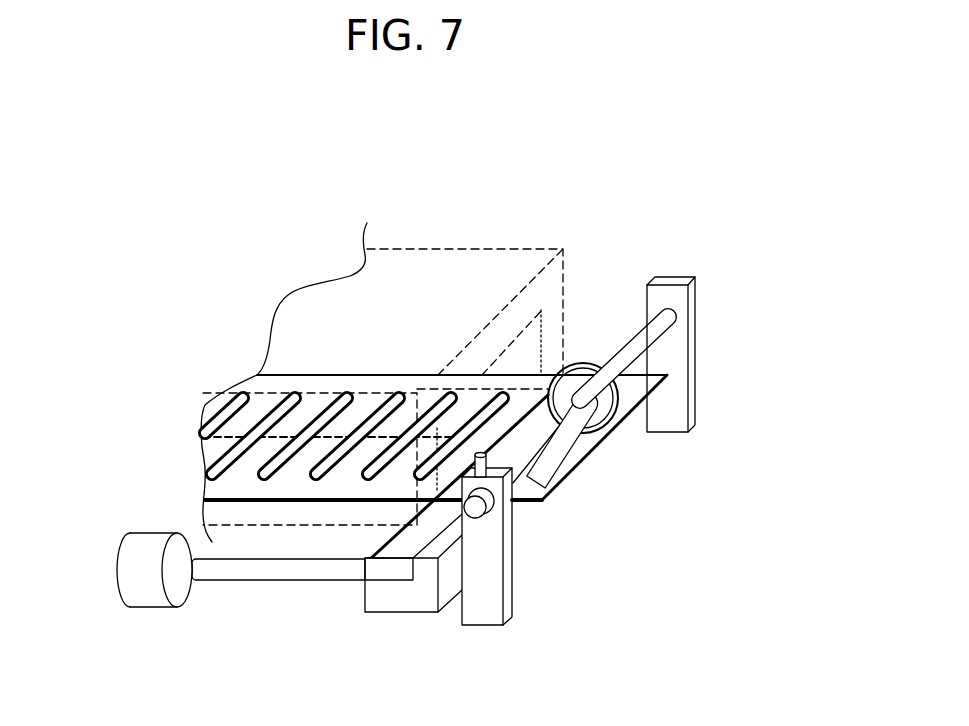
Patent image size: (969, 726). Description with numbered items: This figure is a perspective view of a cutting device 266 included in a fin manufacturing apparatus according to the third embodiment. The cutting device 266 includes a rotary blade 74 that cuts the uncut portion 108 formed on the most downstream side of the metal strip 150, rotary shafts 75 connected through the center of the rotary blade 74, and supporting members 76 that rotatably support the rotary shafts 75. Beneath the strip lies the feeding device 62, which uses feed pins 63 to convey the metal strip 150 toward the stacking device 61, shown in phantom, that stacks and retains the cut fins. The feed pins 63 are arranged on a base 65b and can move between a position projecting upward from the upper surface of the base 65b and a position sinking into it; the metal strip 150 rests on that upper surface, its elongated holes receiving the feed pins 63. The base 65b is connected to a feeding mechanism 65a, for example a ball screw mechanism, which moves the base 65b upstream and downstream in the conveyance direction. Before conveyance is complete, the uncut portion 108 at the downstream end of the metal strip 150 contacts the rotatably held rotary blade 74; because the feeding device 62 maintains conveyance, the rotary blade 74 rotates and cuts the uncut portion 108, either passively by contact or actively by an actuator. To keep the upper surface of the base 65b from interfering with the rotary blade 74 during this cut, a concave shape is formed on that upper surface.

The stacking device 61 is at (465, 298).
The metal strip 150 is at (210, 450).
The feeding device 62 is at (357, 652).
The feed pins 63 is at (515, 487).
The rotary blade 74 is at (600, 400).
The uncut portion 108 is at (580, 430).
The rotary shafts 75 is at (633, 353).
The feeding mechanism 65a is at (133, 577).
The base 65b is at (395, 573).
The supporting members 76 is at (487, 600).
The cutting device 266 is at (597, 612).